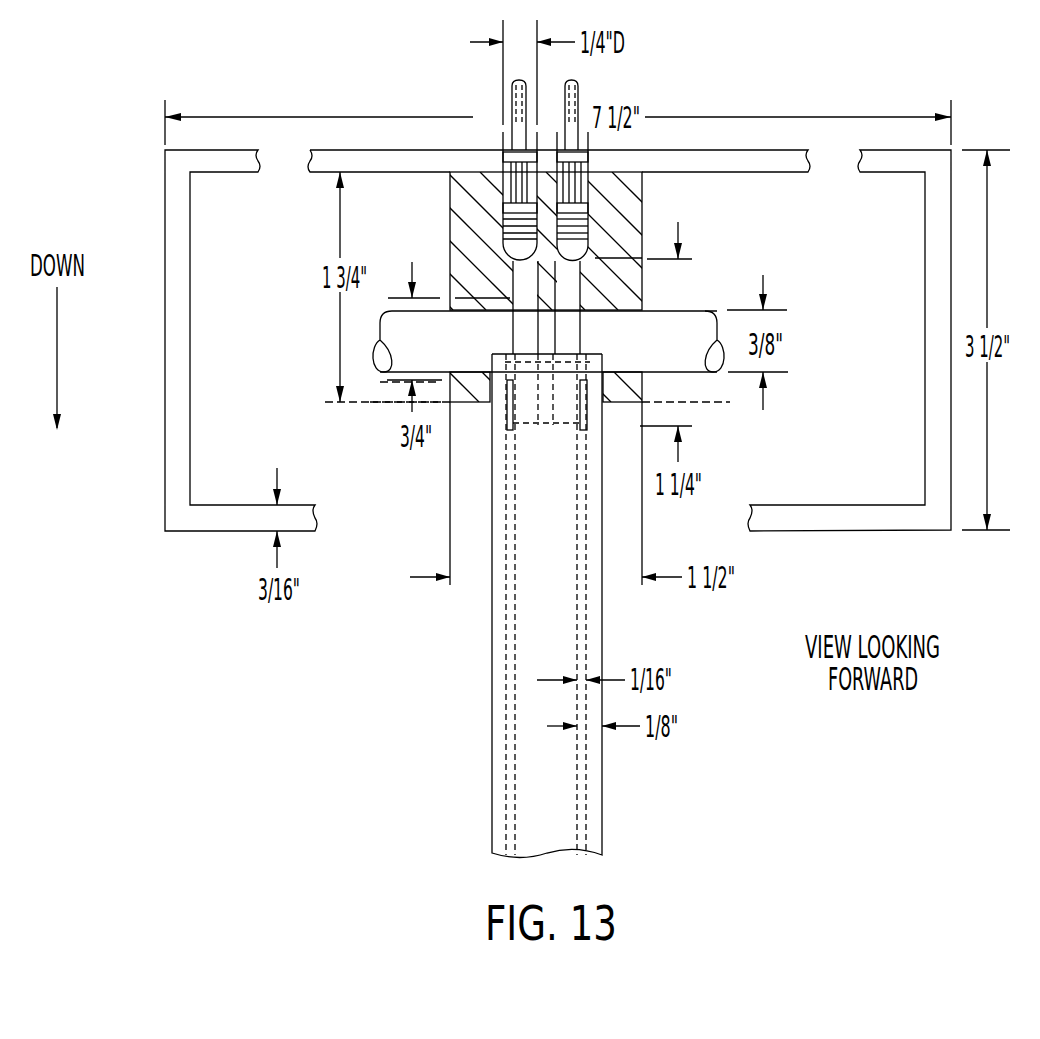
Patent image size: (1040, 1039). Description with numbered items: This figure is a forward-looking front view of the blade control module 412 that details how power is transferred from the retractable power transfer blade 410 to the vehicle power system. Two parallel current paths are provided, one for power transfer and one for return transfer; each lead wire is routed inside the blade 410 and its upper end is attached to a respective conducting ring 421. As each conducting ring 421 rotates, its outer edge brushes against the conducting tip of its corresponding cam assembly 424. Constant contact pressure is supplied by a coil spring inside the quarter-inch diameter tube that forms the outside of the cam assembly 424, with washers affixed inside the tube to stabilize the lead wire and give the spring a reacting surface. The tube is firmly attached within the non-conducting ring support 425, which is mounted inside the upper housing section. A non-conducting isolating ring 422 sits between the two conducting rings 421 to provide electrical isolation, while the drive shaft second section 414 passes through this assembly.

The retractable power transfer blade 410 is at (478, 754).
The blade control module 412 is at (212, 536).
The drive shaft second section 414 is at (366, 331).
The conducting ring 421 is at (590, 288).
The isolating ring 422 is at (542, 390).
The cam assembly 424 is at (546, 163).
The ring support 425 is at (652, 190).